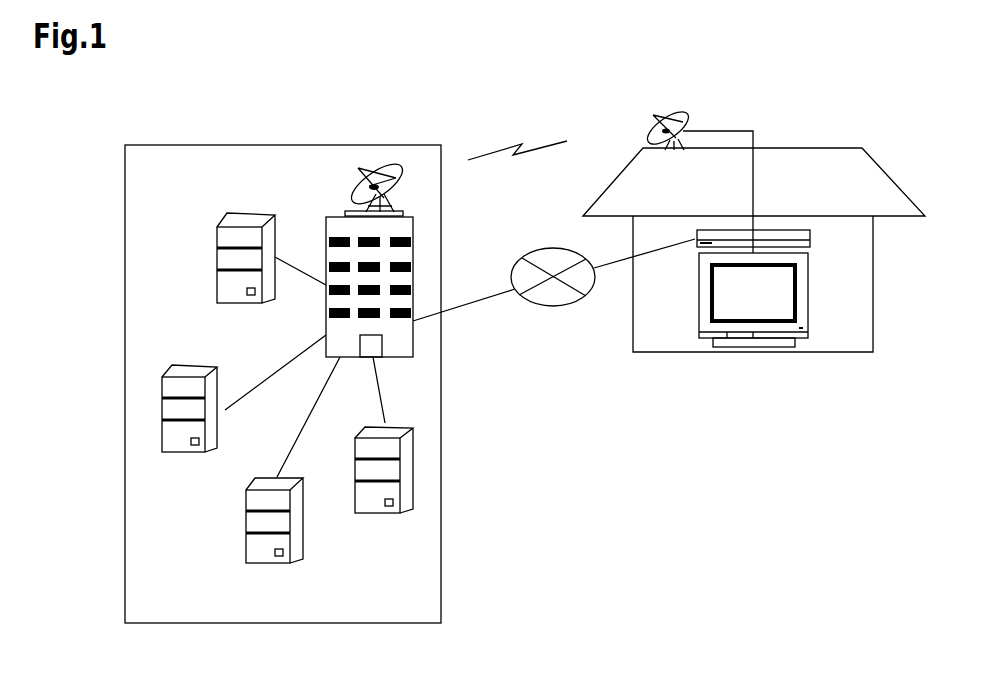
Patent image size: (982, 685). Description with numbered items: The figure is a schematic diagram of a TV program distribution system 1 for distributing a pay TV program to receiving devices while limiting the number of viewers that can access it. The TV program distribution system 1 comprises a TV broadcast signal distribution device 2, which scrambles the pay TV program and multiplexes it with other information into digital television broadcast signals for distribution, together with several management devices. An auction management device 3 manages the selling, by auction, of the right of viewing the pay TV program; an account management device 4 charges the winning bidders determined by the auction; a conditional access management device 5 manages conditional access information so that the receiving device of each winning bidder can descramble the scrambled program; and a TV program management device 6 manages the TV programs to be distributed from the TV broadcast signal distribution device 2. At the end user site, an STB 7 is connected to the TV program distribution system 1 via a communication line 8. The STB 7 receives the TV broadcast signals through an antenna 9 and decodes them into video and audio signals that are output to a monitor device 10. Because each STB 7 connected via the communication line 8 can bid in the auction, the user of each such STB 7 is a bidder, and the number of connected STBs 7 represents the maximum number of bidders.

The TV program distribution system 1 is at (273, 188).
The TV broadcast signal distribution device 2 is at (413, 238).
The auction management device 3 is at (246, 520).
The account management device 4 is at (413, 470).
The conditional access management device 5 is at (217, 262).
The TV program management device 6 is at (162, 410).
The STB 7 is at (810, 236).
The communication line 8 is at (555, 306).
The antenna 9 is at (684, 113).
The monitor device 10 is at (755, 348).